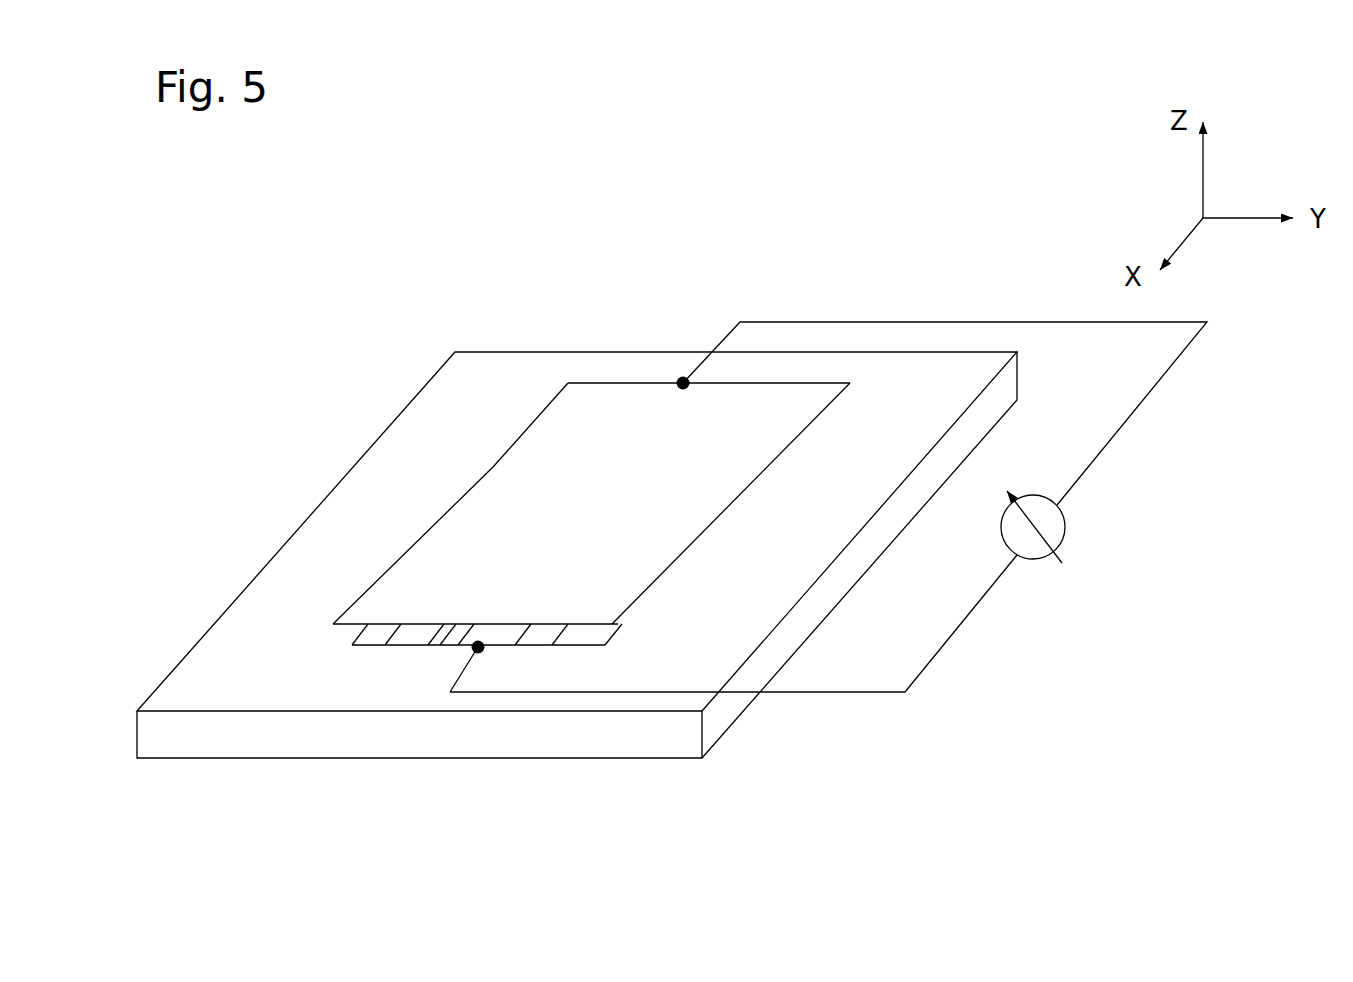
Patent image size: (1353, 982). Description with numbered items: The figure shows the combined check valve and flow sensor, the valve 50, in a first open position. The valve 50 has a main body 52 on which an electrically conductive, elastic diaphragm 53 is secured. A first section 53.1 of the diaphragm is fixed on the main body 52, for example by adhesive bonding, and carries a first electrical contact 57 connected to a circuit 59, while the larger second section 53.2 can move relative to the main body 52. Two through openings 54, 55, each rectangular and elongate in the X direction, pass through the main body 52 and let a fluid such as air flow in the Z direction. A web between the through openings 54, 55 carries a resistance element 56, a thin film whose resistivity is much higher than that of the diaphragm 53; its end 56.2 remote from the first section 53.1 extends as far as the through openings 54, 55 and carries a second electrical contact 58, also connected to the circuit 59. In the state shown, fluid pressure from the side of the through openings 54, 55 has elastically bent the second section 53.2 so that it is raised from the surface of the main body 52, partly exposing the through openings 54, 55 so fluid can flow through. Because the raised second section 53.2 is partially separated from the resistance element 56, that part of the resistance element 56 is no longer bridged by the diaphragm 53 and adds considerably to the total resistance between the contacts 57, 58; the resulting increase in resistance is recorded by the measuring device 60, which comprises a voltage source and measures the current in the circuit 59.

The valve 50 is at (595, 213).
The main body 52 is at (282, 676).
The diaphragm 53 is at (597, 525).
The first section 53.1 is at (724, 390).
The second section 53.2 is at (546, 548).
The through opening 54 is at (403, 630).
The through opening 55 is at (553, 629).
The resistance element 56 is at (493, 626).
The end 56.2 is at (446, 661).
The first electrical contact 57 is at (683, 378).
The second electrical contact 58 is at (435, 625).
The circuit 59 is at (908, 690).
The measuring device 60 is at (1085, 511).